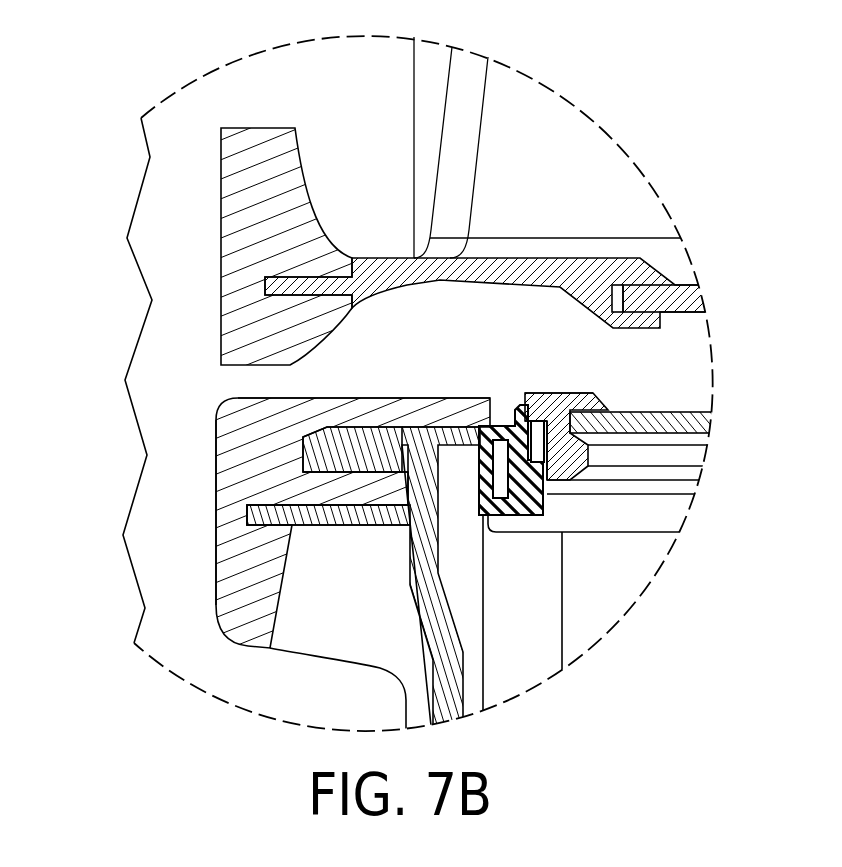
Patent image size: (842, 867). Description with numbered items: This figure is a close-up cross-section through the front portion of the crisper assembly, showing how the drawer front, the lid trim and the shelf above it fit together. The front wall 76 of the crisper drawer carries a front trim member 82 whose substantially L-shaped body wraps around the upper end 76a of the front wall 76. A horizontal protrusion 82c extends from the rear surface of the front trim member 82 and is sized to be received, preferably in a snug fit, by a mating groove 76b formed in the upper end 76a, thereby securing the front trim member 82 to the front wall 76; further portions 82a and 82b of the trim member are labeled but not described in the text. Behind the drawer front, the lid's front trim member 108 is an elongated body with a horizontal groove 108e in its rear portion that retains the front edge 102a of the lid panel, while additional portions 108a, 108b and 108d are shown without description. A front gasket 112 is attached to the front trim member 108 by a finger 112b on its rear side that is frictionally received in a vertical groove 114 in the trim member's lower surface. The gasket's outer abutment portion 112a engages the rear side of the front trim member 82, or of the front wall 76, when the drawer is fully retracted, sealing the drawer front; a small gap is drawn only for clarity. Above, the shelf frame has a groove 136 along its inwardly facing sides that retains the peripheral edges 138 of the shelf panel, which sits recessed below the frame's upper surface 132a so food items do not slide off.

The front wall 76 is at (452, 615).
The upper end 76a is at (477, 438).
The mating groove 76b is at (412, 529).
The front trim member 82 is at (222, 597).
The carrier upper arm 82a is at (335, 397).
The carrier outer wall 82b is at (214, 461).
The horizontal protrusion 82c is at (327, 490).
The front edge 102a is at (570, 410).
The front trim member 108 is at (597, 452).
The support top surface 108a is at (536, 419).
The support flange 108b is at (565, 430).
The support lower plate 108d is at (530, 464).
The horizontal groove 108e is at (616, 384).
The front gasket 112 is at (505, 382).
The abutment portion 112a is at (441, 463).
The finger 112b is at (539, 484).
The vertical groove 114 is at (534, 419).
The upper surface 132a is at (587, 258).
The groove 136 is at (652, 284).
The peripheral edges 138 is at (613, 284).